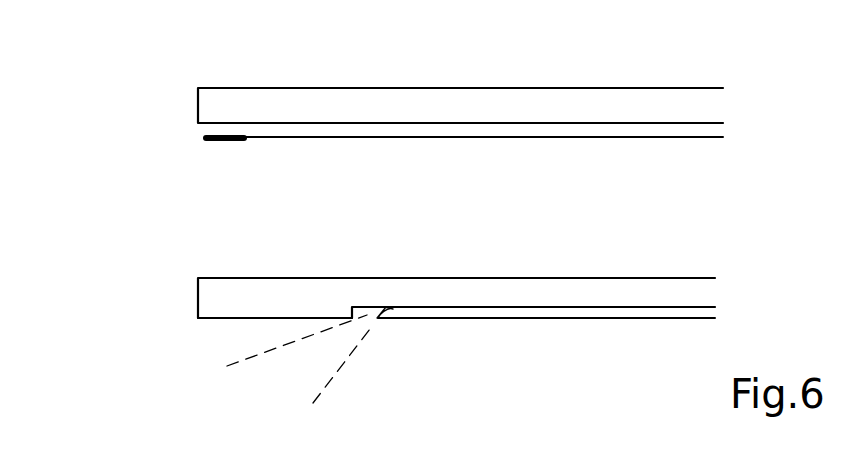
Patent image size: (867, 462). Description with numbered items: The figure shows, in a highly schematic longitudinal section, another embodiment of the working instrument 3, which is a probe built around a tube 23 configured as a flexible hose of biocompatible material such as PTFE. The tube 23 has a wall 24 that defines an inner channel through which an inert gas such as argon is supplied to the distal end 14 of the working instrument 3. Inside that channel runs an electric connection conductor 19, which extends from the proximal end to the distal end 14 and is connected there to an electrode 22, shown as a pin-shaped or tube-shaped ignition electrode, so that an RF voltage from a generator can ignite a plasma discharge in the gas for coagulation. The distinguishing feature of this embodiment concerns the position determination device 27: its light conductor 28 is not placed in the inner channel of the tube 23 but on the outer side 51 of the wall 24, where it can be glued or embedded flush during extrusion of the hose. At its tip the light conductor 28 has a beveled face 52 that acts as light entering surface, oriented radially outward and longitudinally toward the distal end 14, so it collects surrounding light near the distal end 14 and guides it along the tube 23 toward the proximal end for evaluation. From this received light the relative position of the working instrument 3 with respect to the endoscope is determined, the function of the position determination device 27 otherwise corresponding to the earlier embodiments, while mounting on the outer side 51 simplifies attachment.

The working instrument 3 is at (190, 100).
The connection conductor 19 is at (350, 137).
The electrode 22 is at (222, 140).
The tube 23 is at (462, 112).
The distal end 14 is at (198, 298).
The outer side 51 is at (225, 318).
The position determination device 27 is at (335, 348).
The beveled face 52 is at (385, 308).
The light conductor 28 is at (602, 318).
The wall 24 is at (686, 304).